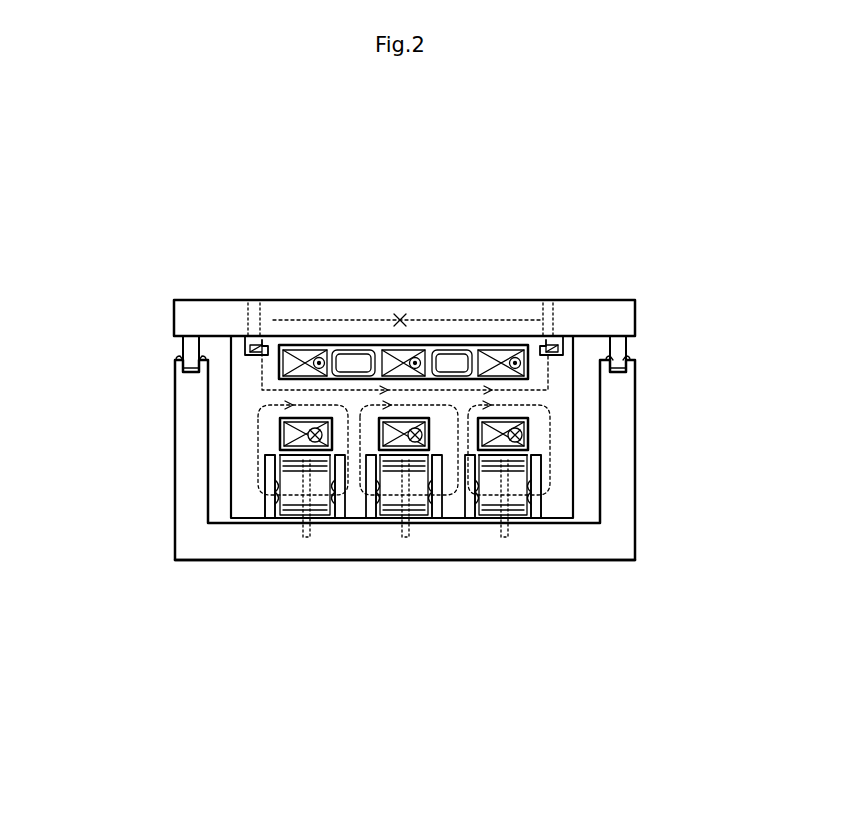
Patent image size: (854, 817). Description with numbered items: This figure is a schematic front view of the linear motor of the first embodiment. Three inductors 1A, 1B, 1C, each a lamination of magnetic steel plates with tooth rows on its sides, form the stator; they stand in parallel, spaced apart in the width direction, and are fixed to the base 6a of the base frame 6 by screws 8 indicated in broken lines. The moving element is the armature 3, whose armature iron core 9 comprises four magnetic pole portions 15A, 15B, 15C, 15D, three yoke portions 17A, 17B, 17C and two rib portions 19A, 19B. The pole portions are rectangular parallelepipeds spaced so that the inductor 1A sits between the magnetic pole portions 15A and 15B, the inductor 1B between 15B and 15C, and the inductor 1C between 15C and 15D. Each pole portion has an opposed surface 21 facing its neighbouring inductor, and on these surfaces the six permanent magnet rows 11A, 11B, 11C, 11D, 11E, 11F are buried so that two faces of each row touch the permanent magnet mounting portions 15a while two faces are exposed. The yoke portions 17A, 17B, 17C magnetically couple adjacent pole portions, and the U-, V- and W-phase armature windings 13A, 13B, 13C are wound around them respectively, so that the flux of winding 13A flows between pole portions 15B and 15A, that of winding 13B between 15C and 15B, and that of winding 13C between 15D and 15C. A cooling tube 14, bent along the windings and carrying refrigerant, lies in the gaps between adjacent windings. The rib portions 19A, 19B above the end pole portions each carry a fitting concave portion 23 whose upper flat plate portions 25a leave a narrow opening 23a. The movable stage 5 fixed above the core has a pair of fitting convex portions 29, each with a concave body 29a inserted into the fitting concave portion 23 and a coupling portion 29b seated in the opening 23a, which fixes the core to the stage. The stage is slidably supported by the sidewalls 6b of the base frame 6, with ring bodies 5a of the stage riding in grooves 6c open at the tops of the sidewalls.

The inductor 1A is at (383, 534).
The inductor 1B is at (401, 557).
The inductor 1C is at (571, 536).
The armature 3 is at (220, 414).
The movable stage 5 is at (233, 312).
The ring body 5a is at (191, 338).
The base frame 6 is at (632, 548).
The base 6a is at (220, 547).
The sidewall 6b is at (262, 455).
The groove 6c is at (202, 362).
The screw 8 is at (277, 522).
The armature iron core 9 is at (600, 420).
The permanent magnet row 11A is at (269, 520).
The permanent magnet row 11B is at (332, 520).
The permanent magnet row 11C is at (368, 520).
The permanent magnet row 11D is at (440, 520).
The permanent magnet row 11E is at (484, 520).
The permanent magnet row 11F is at (540, 520).
The armature winding 13A is at (296, 352).
The armature winding 13B is at (398, 352).
The armature winding 13C is at (502, 352).
The cooling tube 14 is at (358, 354).
The magnetic pole portion 15A is at (265, 478).
The magnetic pole portion 15B is at (312, 520).
The magnetic pole portion 15C is at (472, 520).
The magnetic pole portion 15D is at (572, 530).
The permanent magnet mounting portion 15a is at (275, 492).
The yoke portion 17A is at (303, 409).
The yoke portion 17B is at (413, 400).
The yoke portion 17C is at (503, 407).
The rib portion 19A is at (222, 406).
The rib portion 19B is at (578, 400).
The opposed surface 21 is at (278, 456).
The fitting concave portion 23 is at (246, 352).
The opening 23a is at (257, 344).
The flat plate portion 25a is at (244, 342).
The fitting convex portion 29 is at (398, 341).
The concave body 29a is at (180, 373).
The coupling portion 29b is at (178, 366).